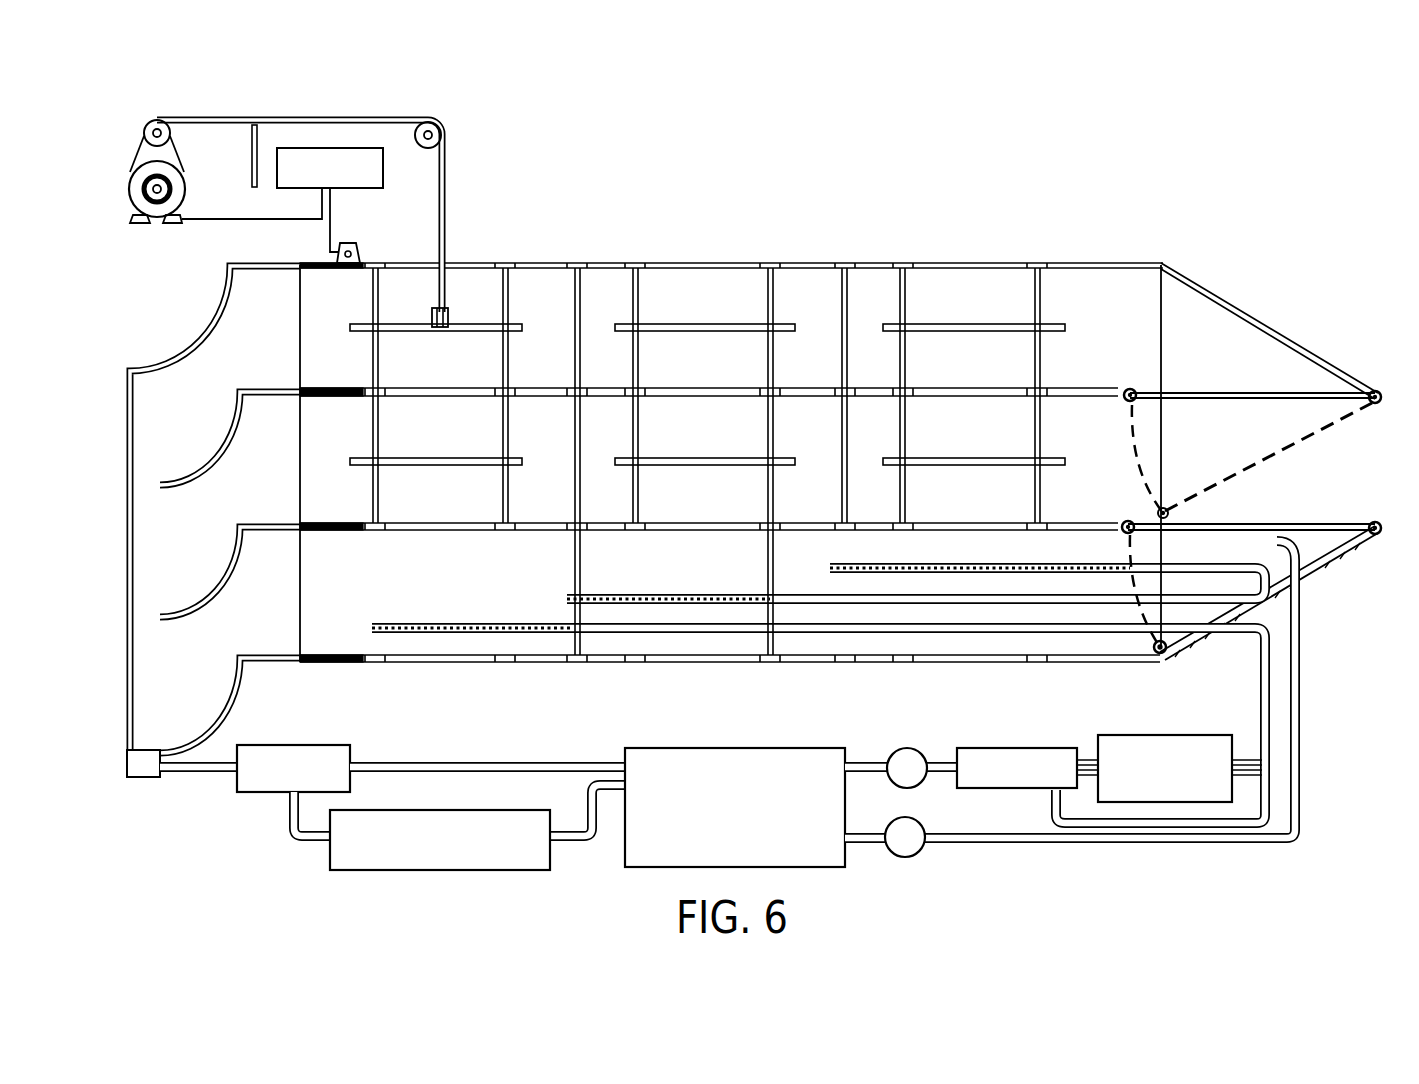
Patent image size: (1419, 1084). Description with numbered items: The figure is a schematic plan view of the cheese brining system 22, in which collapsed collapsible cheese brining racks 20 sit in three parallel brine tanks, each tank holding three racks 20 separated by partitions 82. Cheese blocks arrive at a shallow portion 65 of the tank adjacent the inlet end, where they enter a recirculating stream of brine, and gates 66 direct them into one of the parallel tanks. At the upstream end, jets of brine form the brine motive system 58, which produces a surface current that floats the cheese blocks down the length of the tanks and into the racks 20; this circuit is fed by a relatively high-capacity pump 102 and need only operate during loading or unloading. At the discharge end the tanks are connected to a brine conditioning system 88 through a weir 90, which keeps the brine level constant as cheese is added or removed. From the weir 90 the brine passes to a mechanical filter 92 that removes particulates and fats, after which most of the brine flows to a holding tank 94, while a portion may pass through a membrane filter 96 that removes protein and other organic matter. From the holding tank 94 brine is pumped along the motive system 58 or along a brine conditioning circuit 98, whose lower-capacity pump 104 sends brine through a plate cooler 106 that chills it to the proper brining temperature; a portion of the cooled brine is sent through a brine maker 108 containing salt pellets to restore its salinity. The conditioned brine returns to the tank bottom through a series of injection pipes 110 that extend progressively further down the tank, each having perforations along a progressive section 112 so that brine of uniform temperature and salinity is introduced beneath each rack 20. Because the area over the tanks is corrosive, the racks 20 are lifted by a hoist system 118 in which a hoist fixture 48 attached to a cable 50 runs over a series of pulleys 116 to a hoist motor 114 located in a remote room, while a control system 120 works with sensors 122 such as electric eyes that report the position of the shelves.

The collapsible cheese brining rack 20 is at (510, 310).
The cheese brining system 22 is at (884, 246).
The hoist fixture 48 is at (478, 333).
The cable 50 is at (446, 248).
The brine motive system 58 is at (1301, 727).
The shallow portion 65 is at (1211, 441).
The gates 66 is at (1200, 392).
The partitions 82 is at (634, 263).
The brine conditioning system 88 is at (1012, 856).
The weir 90 is at (150, 752).
The mechanical filter 92 is at (330, 745).
The holding tank 94 is at (718, 833).
The membrane filter 96 is at (415, 871).
The brine conditioning circuit 98 is at (868, 754).
The pump 102 is at (908, 858).
The pump 104 is at (906, 748).
The plate cooler 106 is at (1010, 748).
The brine maker 108 is at (1142, 779).
The injection pipes 110 is at (1187, 566).
The perforated sections 112 is at (447, 620).
The hoist motor 114 is at (187, 199).
The pulleys 116 is at (170, 121).
The hoist system 118 is at (365, 110).
The control system 120 is at (348, 147).
The sensors 122 is at (360, 254).